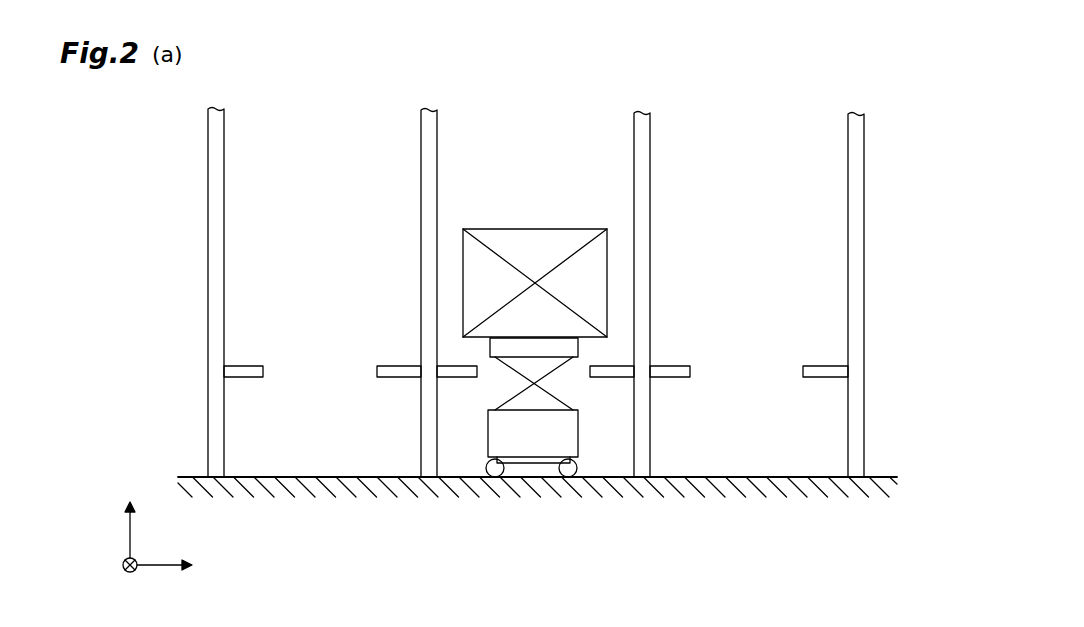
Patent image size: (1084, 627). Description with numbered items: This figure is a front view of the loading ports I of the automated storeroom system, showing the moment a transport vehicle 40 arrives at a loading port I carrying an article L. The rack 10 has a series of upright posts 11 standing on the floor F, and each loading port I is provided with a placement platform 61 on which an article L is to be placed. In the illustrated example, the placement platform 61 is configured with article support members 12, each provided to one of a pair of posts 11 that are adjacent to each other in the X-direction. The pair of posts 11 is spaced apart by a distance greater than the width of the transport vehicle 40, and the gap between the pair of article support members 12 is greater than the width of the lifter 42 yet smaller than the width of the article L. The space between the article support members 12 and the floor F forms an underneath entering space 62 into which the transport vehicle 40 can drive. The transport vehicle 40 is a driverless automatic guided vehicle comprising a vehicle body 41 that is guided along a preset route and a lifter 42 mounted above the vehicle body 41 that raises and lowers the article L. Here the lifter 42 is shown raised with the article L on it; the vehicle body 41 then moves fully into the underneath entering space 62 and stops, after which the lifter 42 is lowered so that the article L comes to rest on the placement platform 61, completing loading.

The rack 10 is at (891, 123).
The posts 11 is at (208, 178).
The article support members 12 is at (240, 365).
The placement platform 61 is at (536, 371).
The underneath entering space 62 is at (403, 463).
The transport vehicle 40 is at (535, 538).
The vehicle body 41 is at (520, 462).
The lifter 42 is at (508, 358).
The article L is at (571, 229).
The floor F is at (885, 476).
The loading port I is at (240, 161).